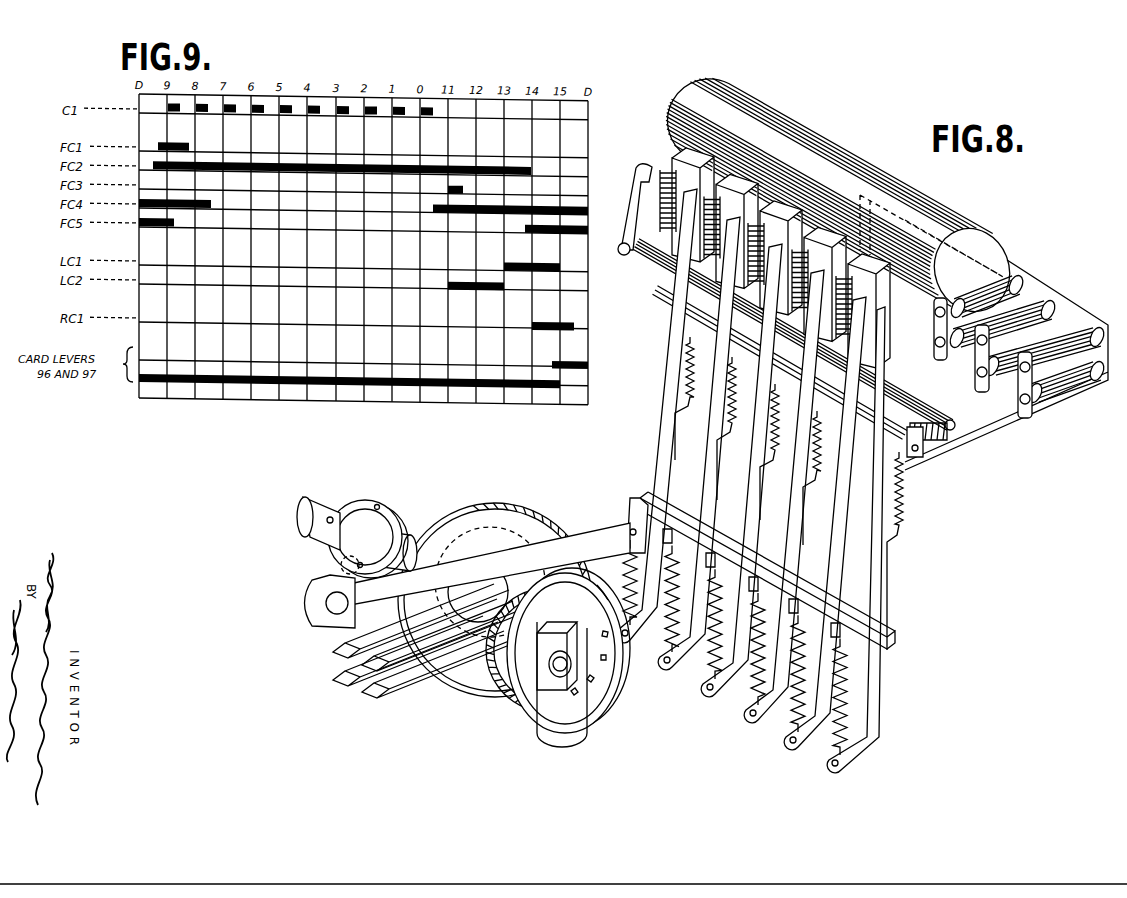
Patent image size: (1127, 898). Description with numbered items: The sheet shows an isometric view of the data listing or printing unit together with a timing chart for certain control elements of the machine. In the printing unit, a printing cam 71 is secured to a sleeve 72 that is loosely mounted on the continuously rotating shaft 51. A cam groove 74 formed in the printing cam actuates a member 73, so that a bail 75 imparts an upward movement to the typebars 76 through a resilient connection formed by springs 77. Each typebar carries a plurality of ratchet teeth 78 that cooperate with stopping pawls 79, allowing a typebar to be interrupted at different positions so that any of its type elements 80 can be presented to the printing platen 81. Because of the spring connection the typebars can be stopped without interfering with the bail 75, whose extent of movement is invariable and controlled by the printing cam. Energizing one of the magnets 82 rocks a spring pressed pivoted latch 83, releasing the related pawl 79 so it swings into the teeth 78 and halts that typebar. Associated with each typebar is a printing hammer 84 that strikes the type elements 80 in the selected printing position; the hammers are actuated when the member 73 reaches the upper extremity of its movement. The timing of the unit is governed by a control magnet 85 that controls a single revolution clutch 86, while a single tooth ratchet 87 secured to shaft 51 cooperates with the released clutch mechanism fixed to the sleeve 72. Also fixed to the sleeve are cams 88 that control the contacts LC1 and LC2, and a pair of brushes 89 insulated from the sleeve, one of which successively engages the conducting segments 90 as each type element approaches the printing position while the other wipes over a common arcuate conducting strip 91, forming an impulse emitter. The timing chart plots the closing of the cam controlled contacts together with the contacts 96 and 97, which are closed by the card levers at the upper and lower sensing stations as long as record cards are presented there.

In FIG. 8, the continuously rotating shaft 51 is at (318, 497).
In FIG. 8, the printing cam 71 is at (447, 514).
In FIG. 8, the sleeve 72 is at (400, 531).
In FIG. 8, the member 73 is at (585, 534).
In FIG. 8, the cam groove 74 is at (520, 540).
In FIG. 8, the bail 75 is at (761, 568).
In FIG. 8, the typebars 76 is at (882, 578).
In FIG. 8, the springs 77 is at (830, 741).
In FIG. 8, the ratchet teeth 78 is at (906, 513).
In FIG. 8, the stopping pawls 79 is at (925, 442).
In FIG. 8, the type elements 80 is at (670, 172).
In FIG. 8, the printing platen 81 is at (828, 152).
In FIG. 8, the magnets 82 is at (1078, 387).
In FIG. 8, the spring pressed pivoted latch 83 is at (932, 438).
In FIG. 8, the printing hammer 84 is at (640, 206).
In FIG. 8, the control magnet 85 is at (355, 632).
In FIG. 8, the single revolution clutch 86 is at (332, 563).
In FIG. 8, the single tooth ratchet 87 is at (370, 500).
In FIG. 8, the cams 88 is at (481, 570).
In FIG. 8, the brushes 89 is at (548, 728).
In FIG. 8, the conducting segments 90 is at (616, 672).
In FIG. 8, the common arcuate conducting strip 91 is at (600, 605).
In FIG. 9, the contacts 96 is at (363, 372).
In FIG. 9, the contacts 97 is at (570, 365).
In FIG. 8, the contacts LC1 is at (437, 680).
In FIG. 8, the contacts LC2 is at (470, 686).